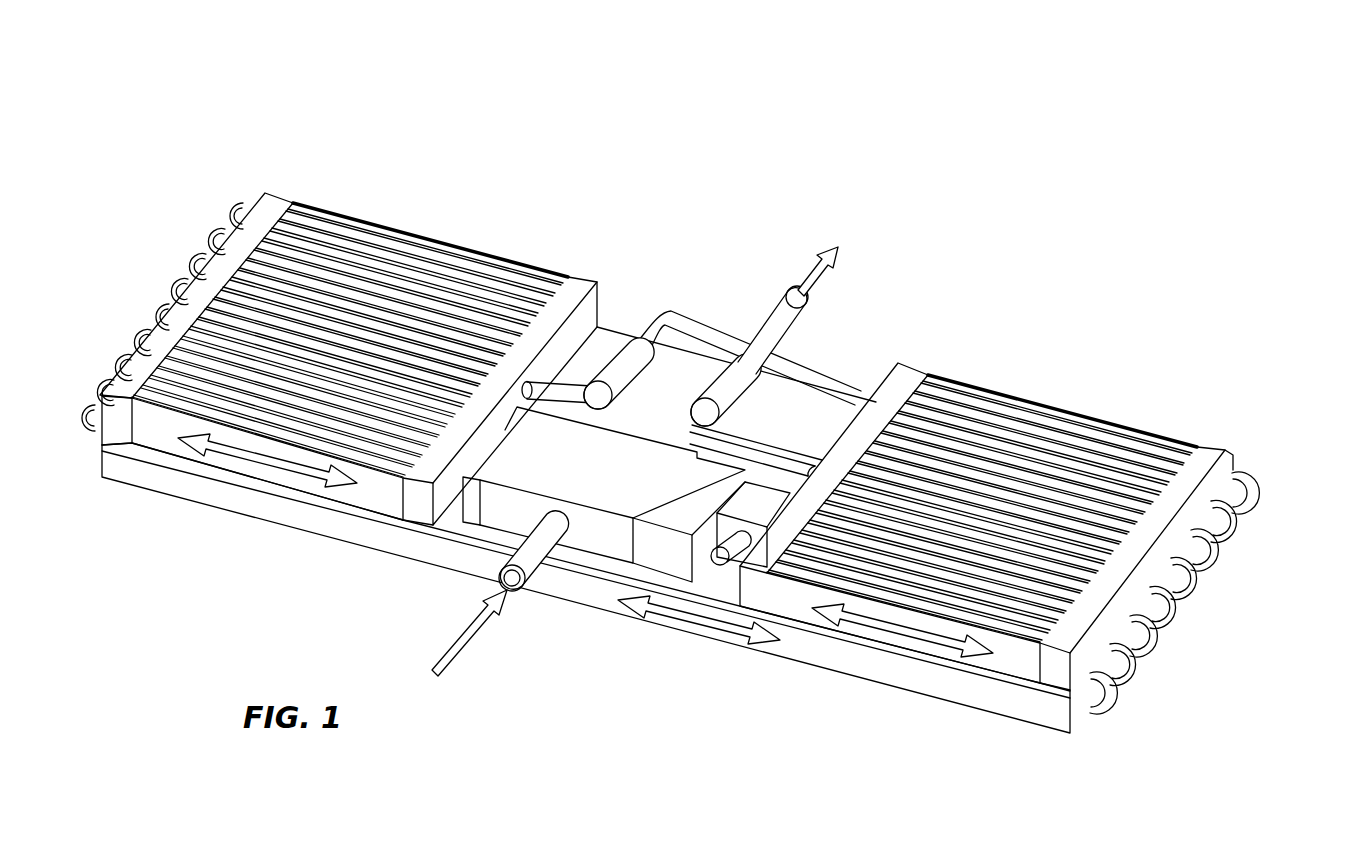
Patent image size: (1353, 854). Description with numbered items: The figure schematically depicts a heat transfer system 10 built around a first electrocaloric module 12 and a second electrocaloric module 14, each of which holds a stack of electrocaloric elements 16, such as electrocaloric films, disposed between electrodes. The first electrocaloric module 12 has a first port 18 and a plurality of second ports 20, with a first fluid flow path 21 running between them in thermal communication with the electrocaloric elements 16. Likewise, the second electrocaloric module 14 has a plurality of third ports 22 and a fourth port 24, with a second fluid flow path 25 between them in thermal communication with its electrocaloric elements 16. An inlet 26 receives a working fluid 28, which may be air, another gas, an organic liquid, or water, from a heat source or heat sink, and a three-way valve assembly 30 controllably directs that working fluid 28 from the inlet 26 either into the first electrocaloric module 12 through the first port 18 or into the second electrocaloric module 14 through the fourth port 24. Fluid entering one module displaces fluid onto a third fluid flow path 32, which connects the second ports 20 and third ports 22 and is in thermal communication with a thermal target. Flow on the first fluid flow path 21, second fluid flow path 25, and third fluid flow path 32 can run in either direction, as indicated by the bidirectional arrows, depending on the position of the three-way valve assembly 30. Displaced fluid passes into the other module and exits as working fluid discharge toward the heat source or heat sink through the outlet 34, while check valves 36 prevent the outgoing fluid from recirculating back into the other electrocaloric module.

The heat transfer system 10 is at (1148, 145).
The first electrocaloric module 12 is at (332, 212).
The second electrocaloric module 14 is at (1097, 417).
The electrocaloric elements 16 is at (397, 290).
The first port 18 is at (577, 467).
The second ports 20 is at (232, 220).
The first fluid flow path 21 is at (233, 458).
The third ports 22 is at (1253, 480).
The fourth port 24 is at (812, 462).
The second fluid flow path 25 is at (925, 642).
The inlet 26 is at (535, 562).
The working fluid 28 is at (823, 252).
The three-way valve assembly 30 is at (627, 363).
The third fluid flow path 32 is at (695, 622).
The outlet 34 is at (765, 318).
The check valves 36 is at (722, 383).